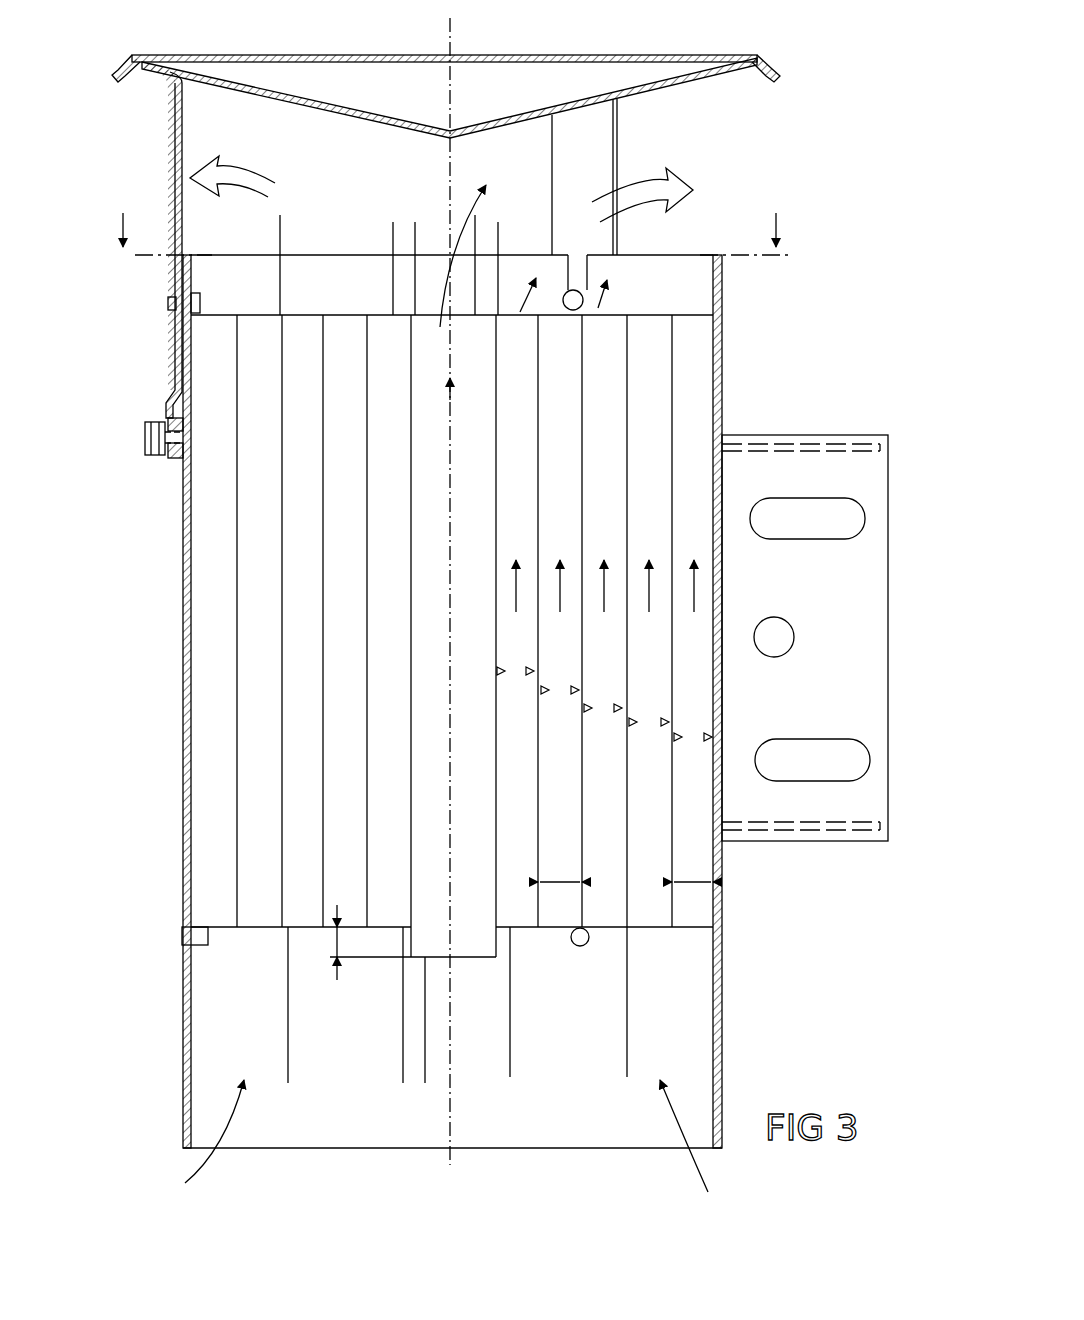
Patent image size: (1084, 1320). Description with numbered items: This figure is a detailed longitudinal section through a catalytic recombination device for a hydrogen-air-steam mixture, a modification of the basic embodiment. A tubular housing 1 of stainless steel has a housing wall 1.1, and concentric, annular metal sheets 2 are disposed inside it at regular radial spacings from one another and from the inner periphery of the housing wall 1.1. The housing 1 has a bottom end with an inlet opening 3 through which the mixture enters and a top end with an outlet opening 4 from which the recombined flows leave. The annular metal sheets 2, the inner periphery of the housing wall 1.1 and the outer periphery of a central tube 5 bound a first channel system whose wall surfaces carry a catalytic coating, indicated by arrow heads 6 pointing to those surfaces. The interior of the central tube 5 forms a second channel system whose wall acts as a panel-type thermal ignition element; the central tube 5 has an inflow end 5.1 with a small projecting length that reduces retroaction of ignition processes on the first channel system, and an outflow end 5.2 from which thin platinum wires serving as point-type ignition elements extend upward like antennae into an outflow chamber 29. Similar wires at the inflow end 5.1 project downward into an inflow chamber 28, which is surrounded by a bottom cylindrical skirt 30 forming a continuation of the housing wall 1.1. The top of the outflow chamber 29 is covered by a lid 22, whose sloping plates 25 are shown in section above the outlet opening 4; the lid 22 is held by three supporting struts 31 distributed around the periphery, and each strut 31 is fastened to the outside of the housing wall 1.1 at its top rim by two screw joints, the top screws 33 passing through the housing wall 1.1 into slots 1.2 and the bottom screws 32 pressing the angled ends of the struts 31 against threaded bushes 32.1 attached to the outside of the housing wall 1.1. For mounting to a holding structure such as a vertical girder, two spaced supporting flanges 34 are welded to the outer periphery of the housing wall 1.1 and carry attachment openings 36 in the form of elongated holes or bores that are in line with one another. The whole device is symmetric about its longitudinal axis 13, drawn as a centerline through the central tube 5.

The tubular housing 1 is at (183, 612).
The housing wall 1.1 is at (183, 742).
The slots 1.2 is at (573, 290).
The concentric annular metal sheets 2 is at (323, 499).
The inlet opening 3 is at (576, 1053).
The outlet opening 4 is at (522, 173).
The central tube 5 is at (411, 577).
The inflow end 5.1 is at (490, 955).
The outflow end 5.2 is at (480, 330).
The arrow heads 6 is at (717, 772).
The longitudinal axis 13 is at (450, 85).
The lid 22 is at (485, 55).
The hood deflector plate 25 is at (343, 118).
The inflow chamber 28 is at (368, 1008).
The outflow chamber 29 is at (590, 165).
The bottom cylindrical skirt 30 is at (186, 1050).
The supporting struts 31 is at (182, 276).
The bottom screws 32 is at (150, 422).
The threaded bushes 32.1 is at (176, 460).
The top screws 33 is at (196, 305).
The supporting flanges 34 is at (878, 790).
The attachment openings 36 is at (810, 525).